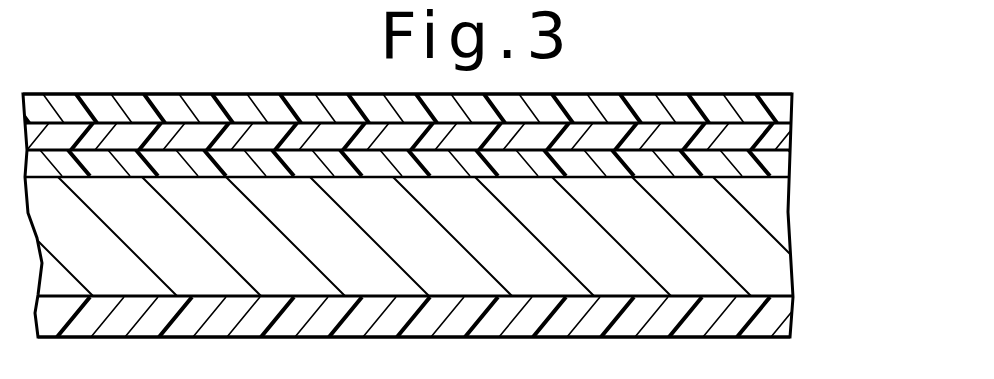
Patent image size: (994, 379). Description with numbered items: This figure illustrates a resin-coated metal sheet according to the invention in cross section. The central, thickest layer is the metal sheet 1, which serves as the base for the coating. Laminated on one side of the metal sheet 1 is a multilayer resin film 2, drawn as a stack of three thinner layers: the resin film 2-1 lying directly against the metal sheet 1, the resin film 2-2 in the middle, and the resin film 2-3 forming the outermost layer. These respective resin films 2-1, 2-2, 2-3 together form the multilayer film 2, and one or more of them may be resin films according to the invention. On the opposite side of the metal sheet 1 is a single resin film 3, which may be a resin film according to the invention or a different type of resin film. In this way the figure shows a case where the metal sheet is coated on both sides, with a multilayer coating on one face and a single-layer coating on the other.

The metal sheet 1 is at (780, 228).
The multilayer resin film 2 is at (463, 154).
The resin film 2-1 is at (795, 175).
The resin film 2-2 is at (795, 143).
The resin film 2-3 is at (793, 100).
The resin film 3 is at (780, 310).